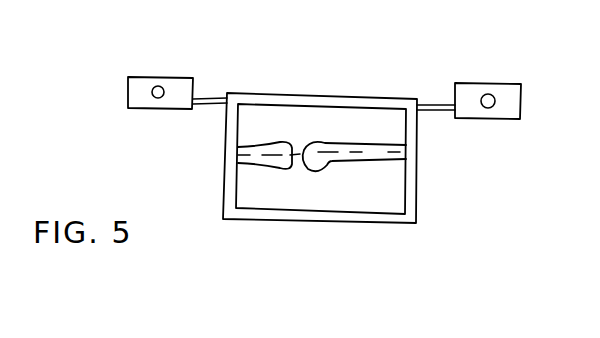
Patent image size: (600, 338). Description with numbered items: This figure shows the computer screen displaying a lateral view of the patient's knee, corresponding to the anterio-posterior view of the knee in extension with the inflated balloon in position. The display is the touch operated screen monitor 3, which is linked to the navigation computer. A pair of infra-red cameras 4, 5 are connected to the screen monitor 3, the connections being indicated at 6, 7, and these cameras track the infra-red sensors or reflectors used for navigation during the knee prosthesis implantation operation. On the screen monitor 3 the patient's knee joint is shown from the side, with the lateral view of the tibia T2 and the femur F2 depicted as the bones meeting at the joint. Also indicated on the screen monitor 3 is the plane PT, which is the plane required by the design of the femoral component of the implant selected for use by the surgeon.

The touch operated screen monitor 3 is at (420, 186).
The infra-red camera 4 is at (178, 77).
The infra-red camera 5 is at (490, 83).
The connection 6 is at (208, 98).
The connection 7 is at (435, 104).
The lateral view of the tibia T2 is at (250, 154).
The femur F2 is at (323, 148).
The plane required by the implant design PT is at (297, 167).